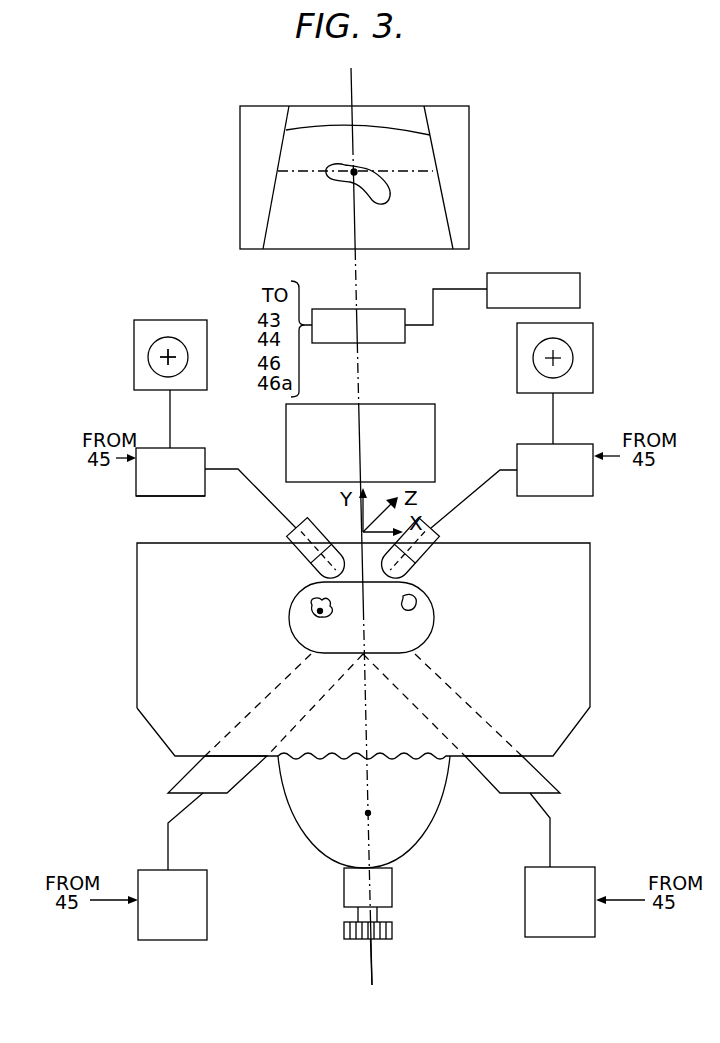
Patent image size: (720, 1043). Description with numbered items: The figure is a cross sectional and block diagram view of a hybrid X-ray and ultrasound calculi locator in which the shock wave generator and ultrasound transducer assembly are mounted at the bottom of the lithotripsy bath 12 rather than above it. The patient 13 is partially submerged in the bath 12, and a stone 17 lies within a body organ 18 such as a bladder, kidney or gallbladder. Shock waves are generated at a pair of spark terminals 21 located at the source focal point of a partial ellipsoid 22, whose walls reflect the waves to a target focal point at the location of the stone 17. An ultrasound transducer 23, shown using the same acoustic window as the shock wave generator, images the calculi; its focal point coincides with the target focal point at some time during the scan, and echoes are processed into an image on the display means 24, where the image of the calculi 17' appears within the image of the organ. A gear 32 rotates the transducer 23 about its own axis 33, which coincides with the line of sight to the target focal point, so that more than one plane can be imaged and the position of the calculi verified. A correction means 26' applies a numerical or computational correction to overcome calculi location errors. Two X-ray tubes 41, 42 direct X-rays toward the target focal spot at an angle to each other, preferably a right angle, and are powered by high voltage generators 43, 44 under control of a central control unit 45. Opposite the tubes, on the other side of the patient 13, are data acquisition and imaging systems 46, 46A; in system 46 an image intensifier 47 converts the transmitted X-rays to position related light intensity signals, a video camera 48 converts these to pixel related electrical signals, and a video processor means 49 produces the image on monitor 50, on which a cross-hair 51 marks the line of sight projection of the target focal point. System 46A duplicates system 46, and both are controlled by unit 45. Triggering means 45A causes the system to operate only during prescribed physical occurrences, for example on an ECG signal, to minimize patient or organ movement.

The display means 24 is at (469, 213).
The image of the calculi 17' is at (377, 154).
The body organ 18 is at (382, 196).
The central control unit 45 is at (353, 313).
The triggering means 45A is at (577, 298).
The correction means 26' is at (360, 430).
The data acquisition and imaging system 46 is at (127, 500).
The monitor 50 is at (153, 328).
The cross-hair 51 is at (186, 344).
The video processor means 49 is at (201, 447).
The data acquisition and imaging system 46A is at (612, 500).
The video camera 48 is at (296, 533).
The image intensifier 47 is at (324, 571).
The bath 12 is at (590, 608).
The patient 13 is at (434, 623).
The stone 17 is at (314, 631).
The X-ray tube 41 is at (190, 779).
The X-ray tube 42 is at (538, 773).
The partial ellipsoid 22 is at (320, 841).
The spark terminals 21 is at (370, 812).
The ultrasound transducer 23 is at (392, 890).
The gear 32 is at (392, 931).
The axis 33 is at (371, 966).
The high voltage generator 43 is at (172, 905).
The high voltage generator 44 is at (560, 902).